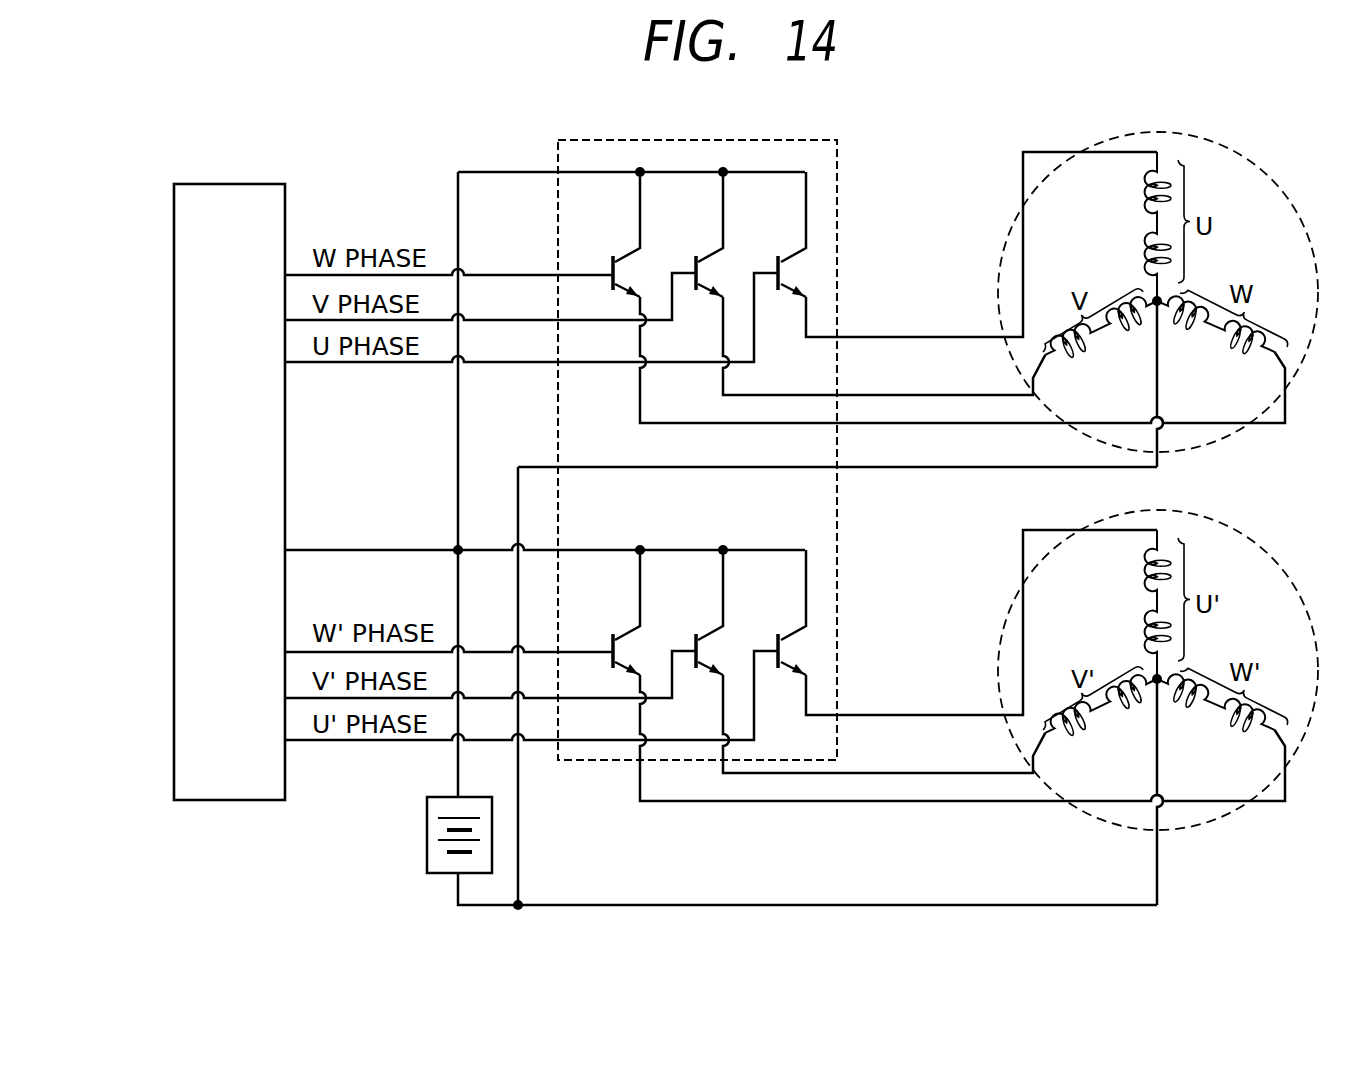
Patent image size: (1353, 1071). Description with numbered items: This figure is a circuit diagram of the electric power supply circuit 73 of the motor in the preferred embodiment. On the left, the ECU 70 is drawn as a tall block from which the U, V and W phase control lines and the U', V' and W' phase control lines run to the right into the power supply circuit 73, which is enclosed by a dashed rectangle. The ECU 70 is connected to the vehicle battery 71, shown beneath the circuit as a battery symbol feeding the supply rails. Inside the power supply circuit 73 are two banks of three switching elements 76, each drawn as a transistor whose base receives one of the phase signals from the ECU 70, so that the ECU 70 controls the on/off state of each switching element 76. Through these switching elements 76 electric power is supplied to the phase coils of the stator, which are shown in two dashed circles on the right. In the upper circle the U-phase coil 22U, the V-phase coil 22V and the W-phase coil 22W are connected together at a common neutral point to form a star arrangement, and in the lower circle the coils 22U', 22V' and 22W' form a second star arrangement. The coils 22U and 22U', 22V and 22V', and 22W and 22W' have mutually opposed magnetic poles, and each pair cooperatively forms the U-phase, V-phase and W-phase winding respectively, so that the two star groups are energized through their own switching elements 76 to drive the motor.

The ECU 70 is at (232, 800).
The vehicle battery 71 is at (427, 848).
The power supply circuit 73 is at (838, 163).
The switching element 76 is at (770, 262).
The U-phase coil 22U is at (1108, 226).
The V-phase coil 22V is at (1101, 358).
The W-phase coil 22W is at (1216, 357).
The U-phase coil 22U' is at (1105, 604).
The V-phase coil 22V' is at (1101, 736).
The W-phase coil 22W' is at (1216, 735).